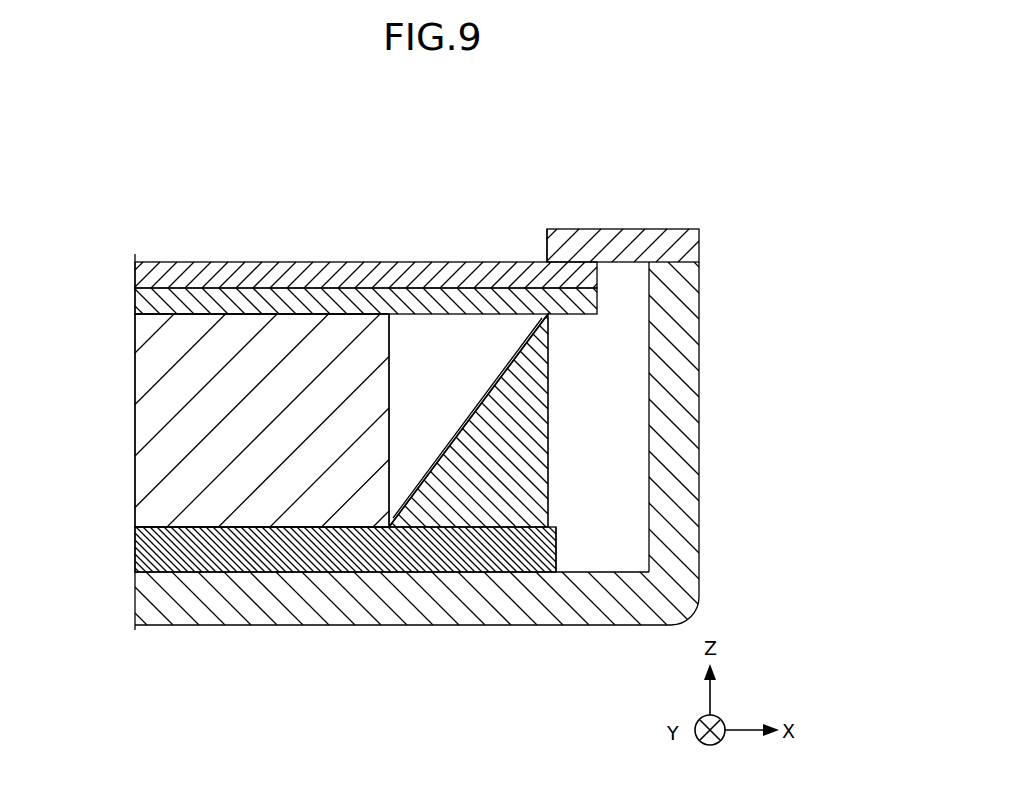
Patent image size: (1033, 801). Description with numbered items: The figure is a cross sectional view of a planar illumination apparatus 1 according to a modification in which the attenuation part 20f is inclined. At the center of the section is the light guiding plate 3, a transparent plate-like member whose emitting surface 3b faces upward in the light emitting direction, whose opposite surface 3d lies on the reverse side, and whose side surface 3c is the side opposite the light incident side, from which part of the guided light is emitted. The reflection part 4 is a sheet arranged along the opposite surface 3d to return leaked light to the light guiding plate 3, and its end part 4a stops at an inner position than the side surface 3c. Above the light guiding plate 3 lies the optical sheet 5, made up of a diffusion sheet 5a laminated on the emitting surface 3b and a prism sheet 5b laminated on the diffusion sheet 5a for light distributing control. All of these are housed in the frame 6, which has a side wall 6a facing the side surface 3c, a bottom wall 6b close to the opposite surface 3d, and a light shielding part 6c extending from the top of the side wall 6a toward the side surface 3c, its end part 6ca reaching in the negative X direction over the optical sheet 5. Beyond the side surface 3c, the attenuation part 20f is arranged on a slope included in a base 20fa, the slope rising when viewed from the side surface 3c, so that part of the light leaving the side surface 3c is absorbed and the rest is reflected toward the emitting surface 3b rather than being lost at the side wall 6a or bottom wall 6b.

The planar illumination apparatus 1 is at (695, 158).
The light guiding plate 3 is at (160, 370).
The emitting surface 3b is at (254, 314).
The side surface 3c is at (390, 343).
The opposite surface 3d is at (265, 527).
The reflection part 4 is at (150, 556).
The end part 4a is at (565, 560).
The optical sheet 5 is at (82, 258).
The diffusion sheet 5a is at (145, 305).
The prism sheet 5b is at (145, 277).
The frame 6 is at (785, 223).
The side wall 6a is at (680, 376).
The bottom wall 6b is at (592, 595).
The light shielding part 6c is at (680, 245).
The end part 6ca is at (547, 229).
The attenuation part 20f is at (465, 425).
The base 20fa is at (485, 505).